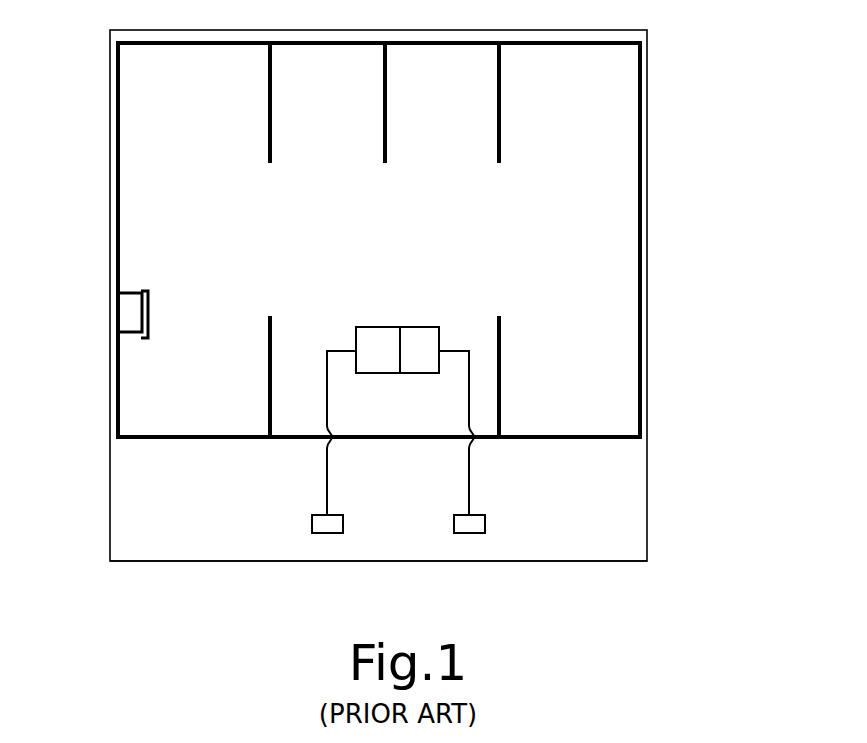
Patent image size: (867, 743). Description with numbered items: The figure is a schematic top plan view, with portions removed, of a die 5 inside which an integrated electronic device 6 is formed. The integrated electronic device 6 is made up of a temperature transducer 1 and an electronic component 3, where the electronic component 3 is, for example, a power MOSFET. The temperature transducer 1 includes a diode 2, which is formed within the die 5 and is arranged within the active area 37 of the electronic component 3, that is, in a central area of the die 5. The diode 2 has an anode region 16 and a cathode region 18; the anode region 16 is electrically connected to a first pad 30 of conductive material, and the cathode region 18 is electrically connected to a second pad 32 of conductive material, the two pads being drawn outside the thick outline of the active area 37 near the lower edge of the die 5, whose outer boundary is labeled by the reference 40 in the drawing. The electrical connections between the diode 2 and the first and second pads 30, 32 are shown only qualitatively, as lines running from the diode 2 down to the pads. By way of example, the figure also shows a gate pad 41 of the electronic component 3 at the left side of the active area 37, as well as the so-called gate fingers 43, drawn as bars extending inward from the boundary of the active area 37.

The temperature transducer 1 is at (550, 488).
The diode 2 is at (406, 306).
The electronic component 3 is at (130, 66).
The die 5 is at (643, 97).
The integrated electronic device 6 is at (684, 59).
The anode region 16 is at (426, 333).
The cathode region 18 is at (366, 338).
The first pad 30 is at (478, 528).
The second pad 32 is at (315, 526).
The active area 37 is at (552, 226).
The outer casing 40 is at (618, 568).
The gate pad 41 is at (133, 295).
The gate fingers 43 is at (384, 100).